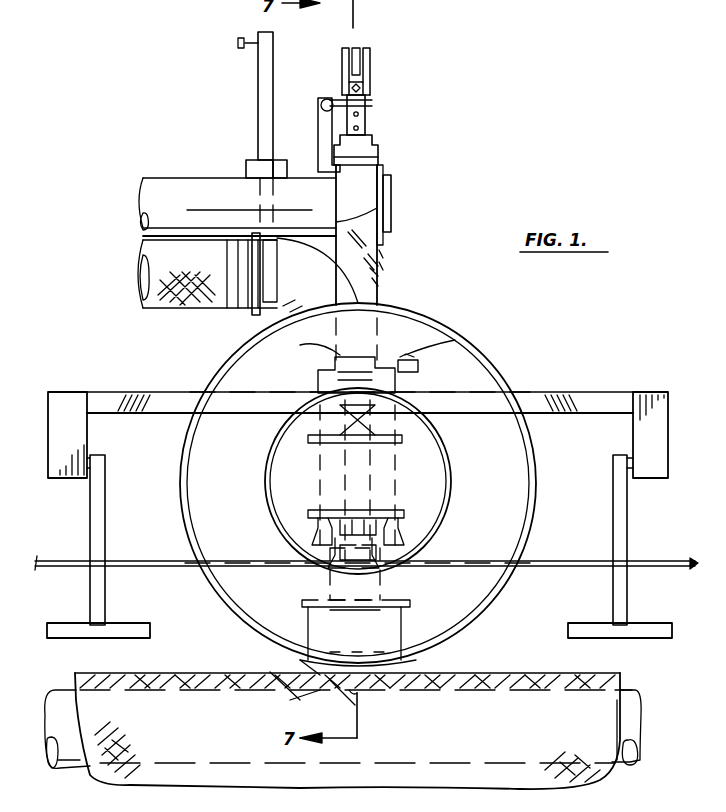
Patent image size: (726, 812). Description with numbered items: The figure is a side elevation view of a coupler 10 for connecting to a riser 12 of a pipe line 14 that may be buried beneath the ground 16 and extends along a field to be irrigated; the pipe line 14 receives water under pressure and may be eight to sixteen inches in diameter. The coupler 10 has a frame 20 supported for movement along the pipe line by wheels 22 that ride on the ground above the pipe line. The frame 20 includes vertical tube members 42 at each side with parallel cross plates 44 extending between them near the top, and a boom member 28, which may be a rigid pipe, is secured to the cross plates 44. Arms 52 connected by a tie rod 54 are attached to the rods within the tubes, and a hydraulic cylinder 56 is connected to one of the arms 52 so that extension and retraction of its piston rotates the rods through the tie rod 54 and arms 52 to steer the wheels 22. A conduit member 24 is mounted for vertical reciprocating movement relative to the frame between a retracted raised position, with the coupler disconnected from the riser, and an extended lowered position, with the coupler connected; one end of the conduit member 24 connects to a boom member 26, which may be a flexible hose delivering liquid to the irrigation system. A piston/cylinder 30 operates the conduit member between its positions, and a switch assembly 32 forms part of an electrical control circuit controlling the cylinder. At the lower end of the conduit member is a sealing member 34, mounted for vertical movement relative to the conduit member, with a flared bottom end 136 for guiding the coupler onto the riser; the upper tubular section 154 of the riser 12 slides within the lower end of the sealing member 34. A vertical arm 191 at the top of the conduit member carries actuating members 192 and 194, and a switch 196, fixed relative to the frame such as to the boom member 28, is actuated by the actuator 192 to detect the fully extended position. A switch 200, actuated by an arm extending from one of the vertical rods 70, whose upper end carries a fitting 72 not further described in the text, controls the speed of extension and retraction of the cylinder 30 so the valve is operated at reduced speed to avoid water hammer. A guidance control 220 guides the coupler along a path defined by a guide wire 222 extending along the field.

The coupler 10 is at (205, 135).
The riser 12 is at (300, 643).
The pipe line 14 is at (633, 700).
The ground 16 is at (493, 673).
The frame 20 is at (378, 277).
The wheels 22 is at (485, 370).
The conduit member 24 is at (277, 312).
The boom member 26 is at (160, 310).
The boom member 28 is at (166, 178).
The piston/cylinder 30 is at (386, 151).
The switch assembly 32 is at (253, 155).
The sealing member 34 is at (397, 530).
The vertical tube members 42 is at (380, 262).
The cross plates 44 is at (386, 205).
The arms 52 is at (424, 366).
The tie rod 54 is at (407, 362).
The hydraulic cylinder 56 is at (410, 332).
The vertical rod 70 is at (367, 118).
The clevis 72 is at (355, 52).
The flared bottom end 136 is at (320, 535).
The tubular section 154 is at (388, 590).
The vertical arm 191 is at (258, 62).
The actuating member 192 is at (238, 43).
The actuating member 194 is at (283, 163).
The switch 196 is at (246, 165).
The switch 200 is at (322, 108).
The guidance control 220 is at (52, 448).
The guide wire 222 is at (670, 560).